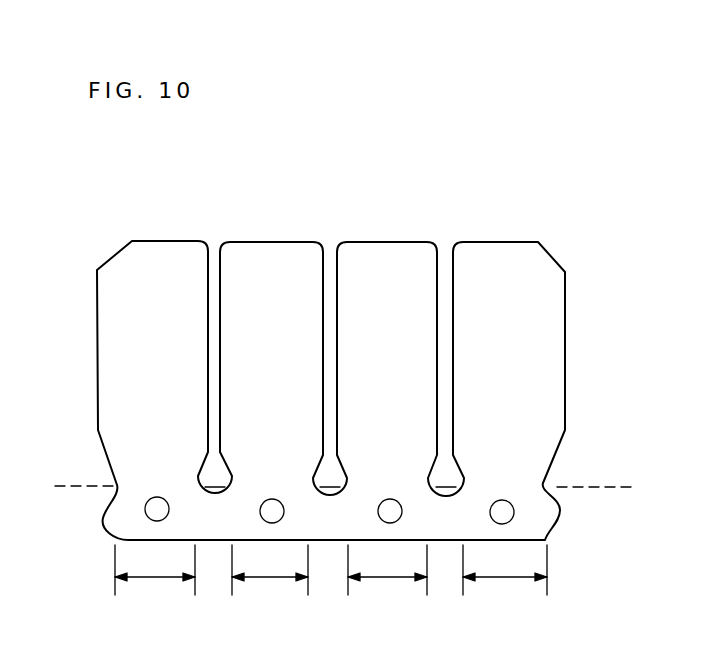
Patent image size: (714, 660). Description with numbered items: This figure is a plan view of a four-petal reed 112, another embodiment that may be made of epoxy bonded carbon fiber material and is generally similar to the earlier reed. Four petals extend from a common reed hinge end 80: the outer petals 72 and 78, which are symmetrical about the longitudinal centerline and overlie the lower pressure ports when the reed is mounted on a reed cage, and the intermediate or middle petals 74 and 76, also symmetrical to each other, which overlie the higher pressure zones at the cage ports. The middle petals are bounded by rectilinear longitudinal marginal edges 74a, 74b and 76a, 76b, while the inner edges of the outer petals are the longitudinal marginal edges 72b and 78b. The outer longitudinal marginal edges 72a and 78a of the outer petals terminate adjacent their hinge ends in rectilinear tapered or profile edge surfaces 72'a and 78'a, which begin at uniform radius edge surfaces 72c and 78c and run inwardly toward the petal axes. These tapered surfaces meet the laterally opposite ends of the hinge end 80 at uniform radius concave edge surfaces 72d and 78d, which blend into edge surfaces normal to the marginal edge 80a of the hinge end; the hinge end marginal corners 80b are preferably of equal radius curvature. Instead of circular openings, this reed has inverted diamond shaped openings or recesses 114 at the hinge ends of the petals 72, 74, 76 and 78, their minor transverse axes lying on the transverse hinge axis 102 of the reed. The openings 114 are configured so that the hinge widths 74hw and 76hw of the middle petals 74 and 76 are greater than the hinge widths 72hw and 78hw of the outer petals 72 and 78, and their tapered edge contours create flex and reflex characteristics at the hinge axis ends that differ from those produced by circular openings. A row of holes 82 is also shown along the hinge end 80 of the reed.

The four-petal reed 112 is at (90, 245).
The outer petal 72 is at (163, 222).
The intermediate petal 74 is at (252, 242).
The intermediate petal 76 is at (383, 243).
The outer petal 78 is at (500, 224).
The outer longitudinal marginal edge 72a is at (97, 315).
The longitudinal marginal edge 72b is at (212, 268).
The uniform radius edge surface 72c is at (98, 432).
The tapered edge surface 72'a is at (75, 457).
The uniform radius concave edge surface 72d is at (103, 503).
The longitudinal marginal edge 74a is at (217, 268).
The longitudinal marginal edge 74b is at (328, 262).
The longitudinal marginal edge 76a is at (334, 265).
The longitudinal marginal edge 76b is at (444, 265).
The outer longitudinal marginal edge 78a is at (566, 306).
The longitudinal marginal edge 78b is at (455, 265).
The uniform radius edge surface 78c is at (564, 432).
The tapered edge surface 78'a is at (581, 456).
The uniform radius concave edge surface 78d is at (558, 494).
The reed hinge end 80 is at (246, 541).
The marginal edge of the hinge end 80a is at (364, 541).
The hinge end marginal corner 80b is at (110, 530).
The hole 82 is at (155, 512).
The transverse hinge axis 102 is at (88, 489).
The inverted diamond shaped opening 114 is at (214, 500).
The hinge width 72hw is at (155, 580).
The hinge width 74hw is at (268, 580).
The hinge width 76hw is at (388, 580).
The hinge width 78hw is at (505, 580).